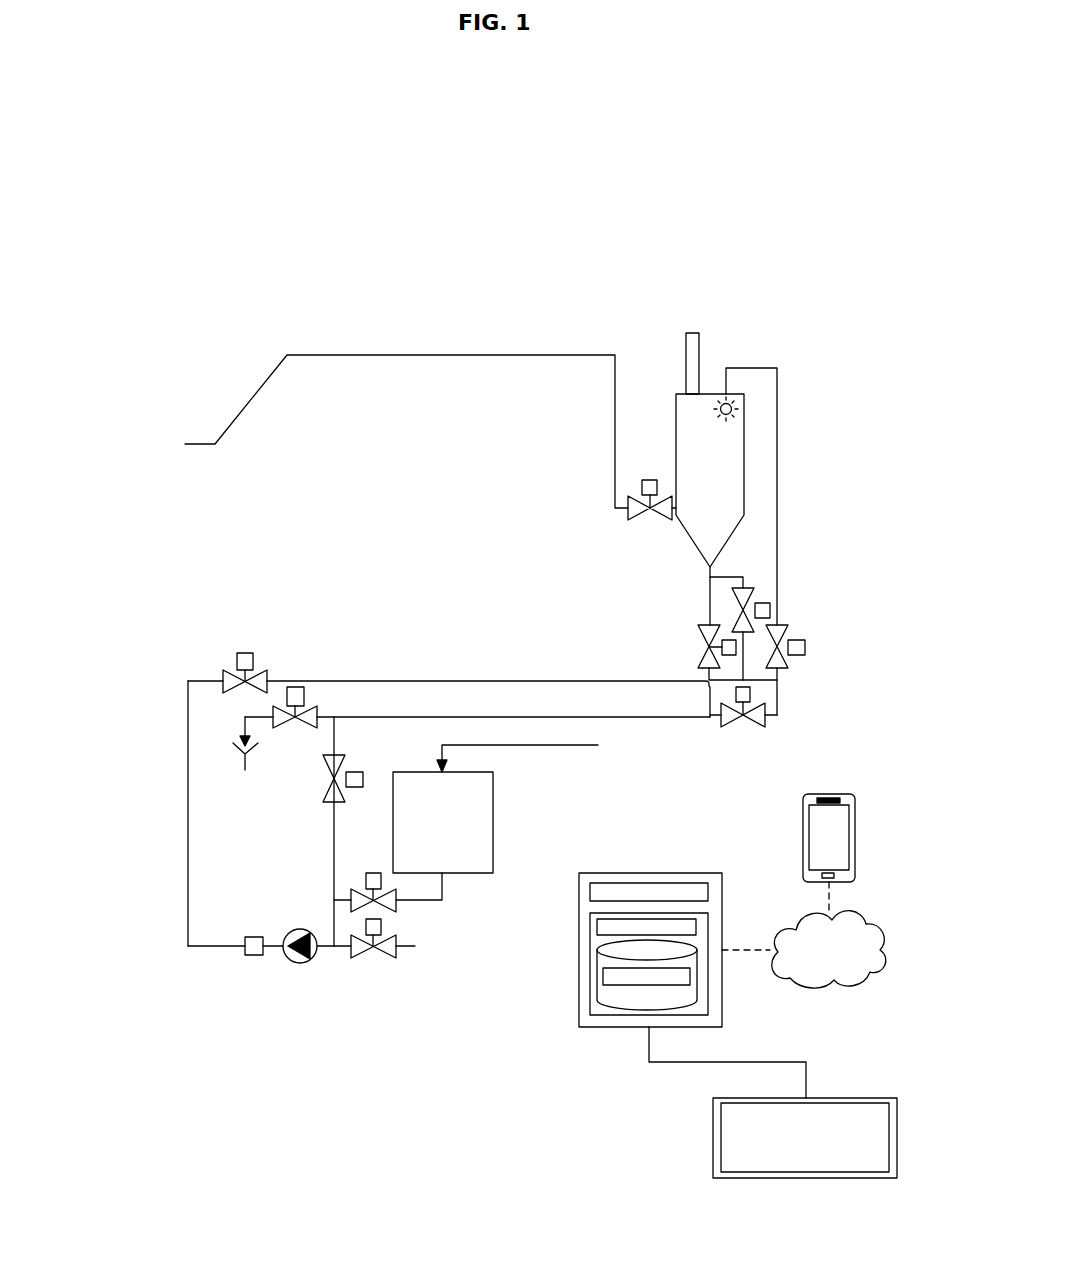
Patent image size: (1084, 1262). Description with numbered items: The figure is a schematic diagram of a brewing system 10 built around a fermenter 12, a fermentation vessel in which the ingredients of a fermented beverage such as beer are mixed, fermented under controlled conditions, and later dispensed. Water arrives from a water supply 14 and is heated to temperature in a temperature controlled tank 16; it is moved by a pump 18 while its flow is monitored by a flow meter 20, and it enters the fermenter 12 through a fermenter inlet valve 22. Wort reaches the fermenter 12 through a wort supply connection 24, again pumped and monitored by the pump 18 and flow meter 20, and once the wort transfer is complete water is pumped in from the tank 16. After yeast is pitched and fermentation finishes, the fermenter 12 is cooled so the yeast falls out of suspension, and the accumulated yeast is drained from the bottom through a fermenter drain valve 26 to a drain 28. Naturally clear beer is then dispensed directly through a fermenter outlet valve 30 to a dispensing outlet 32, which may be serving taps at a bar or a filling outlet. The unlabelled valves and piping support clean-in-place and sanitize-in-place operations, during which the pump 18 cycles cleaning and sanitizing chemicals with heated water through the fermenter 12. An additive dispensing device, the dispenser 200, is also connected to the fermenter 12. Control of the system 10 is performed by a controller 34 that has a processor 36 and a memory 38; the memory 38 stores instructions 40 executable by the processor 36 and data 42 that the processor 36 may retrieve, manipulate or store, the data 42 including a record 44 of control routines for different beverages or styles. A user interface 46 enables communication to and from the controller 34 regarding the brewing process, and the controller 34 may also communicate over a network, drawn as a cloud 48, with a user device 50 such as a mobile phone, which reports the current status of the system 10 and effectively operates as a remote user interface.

The brewing system 10 is at (196, 200).
The dispenser 200 is at (714, 332).
The dispensing outlet 32 is at (188, 461).
The fermenter outlet valve 30 is at (617, 515).
The fermenter 12 is at (683, 532).
The fermenter inlet valve 22 is at (748, 587).
The fermenter drain valve 26 is at (705, 652).
The drain 28 is at (305, 692).
The water supply 14 is at (622, 745).
The temperature controlled tank 16 is at (493, 780).
The wort supply connection 24 is at (437, 942).
The flow meter 20 is at (249, 956).
The pump 18 is at (297, 963).
The controller 34 is at (618, 873).
The processor 36 is at (651, 883).
The memory 38 is at (710, 921).
The instructions 40 is at (597, 929).
The data 42 is at (598, 990).
The record 44 is at (690, 977).
The user interface 46 is at (713, 1140).
The network cloud 48 is at (829, 949).
The user device 50 is at (837, 795).